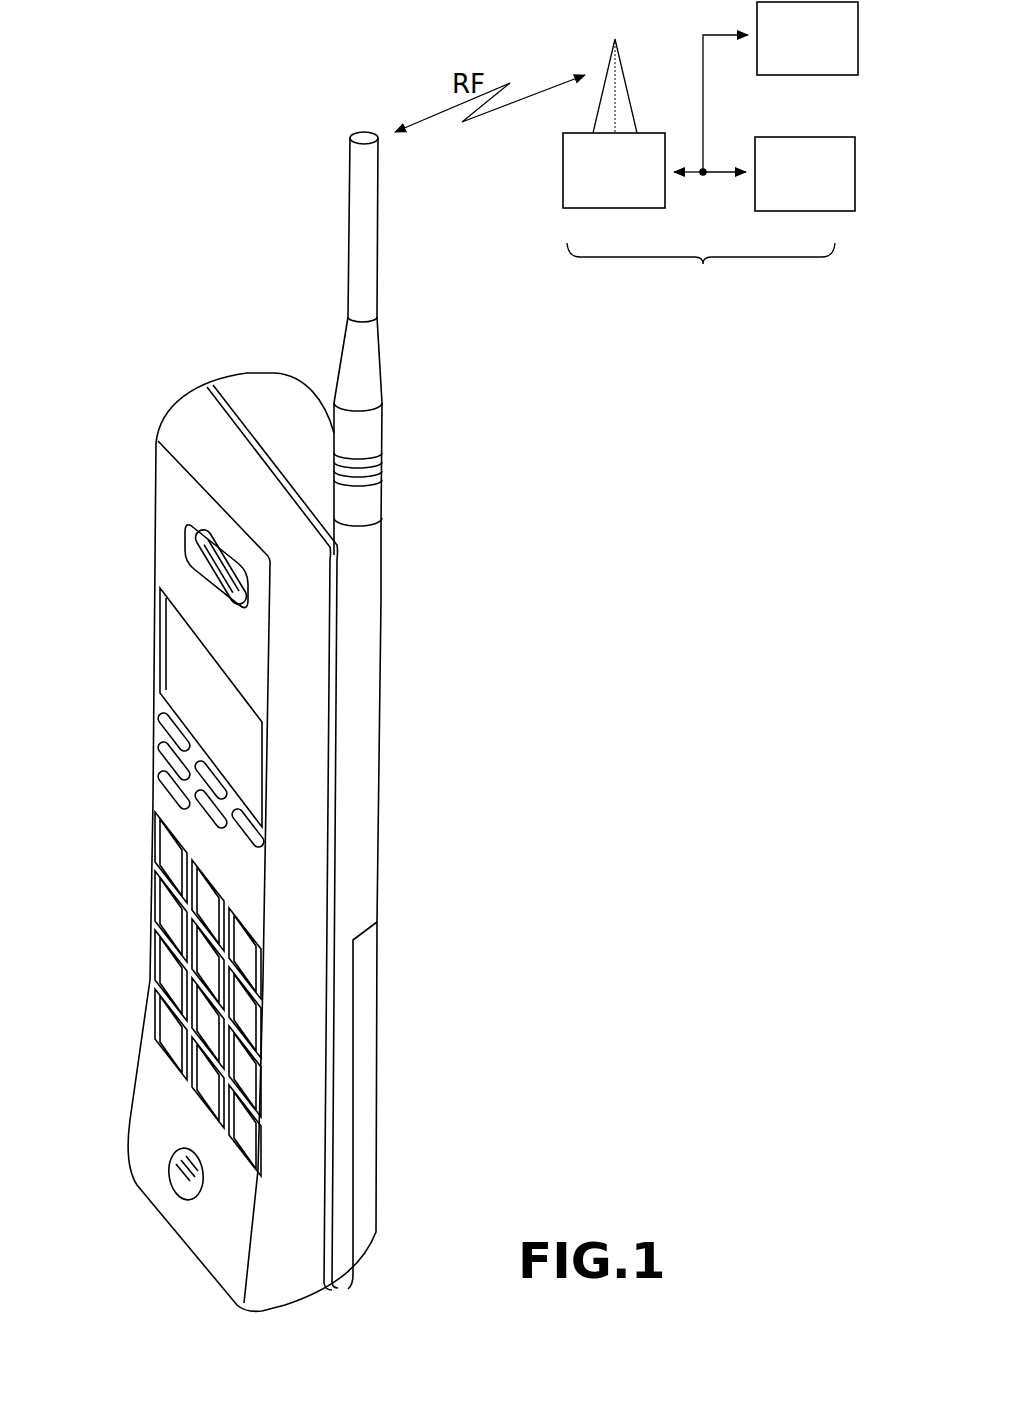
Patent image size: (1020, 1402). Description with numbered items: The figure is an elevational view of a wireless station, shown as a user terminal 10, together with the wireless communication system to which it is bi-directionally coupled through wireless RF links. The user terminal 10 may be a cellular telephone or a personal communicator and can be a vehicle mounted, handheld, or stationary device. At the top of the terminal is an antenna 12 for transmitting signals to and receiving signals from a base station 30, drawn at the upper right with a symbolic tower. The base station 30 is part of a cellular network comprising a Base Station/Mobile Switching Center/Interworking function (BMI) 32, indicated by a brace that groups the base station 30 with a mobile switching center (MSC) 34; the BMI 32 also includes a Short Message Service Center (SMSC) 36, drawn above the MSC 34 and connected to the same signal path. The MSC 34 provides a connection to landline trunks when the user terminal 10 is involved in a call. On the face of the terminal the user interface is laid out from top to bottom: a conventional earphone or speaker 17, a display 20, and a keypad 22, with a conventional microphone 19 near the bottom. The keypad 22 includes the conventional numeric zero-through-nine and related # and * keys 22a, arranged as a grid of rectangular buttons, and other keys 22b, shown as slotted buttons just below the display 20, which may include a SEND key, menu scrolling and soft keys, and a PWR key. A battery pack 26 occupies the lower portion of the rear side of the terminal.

The user terminal 10 is at (138, 412).
The antenna 12 is at (355, 213).
The speaker 17 is at (198, 543).
The microphone 19 is at (182, 1182).
The display 20 is at (175, 658).
The keypad 22 is at (180, 943).
The numeric and related keys 22a is at (155, 985).
The other keys 22b is at (212, 782).
The battery pack 26 is at (372, 1068).
The base station 30 is at (612, 208).
The Base Station/Mobile Switching Center/Interworking function (BMI) 32 is at (709, 166).
The mobile switching center 34 is at (773, 211).
The Short Message Service Center 36 is at (807, 75).